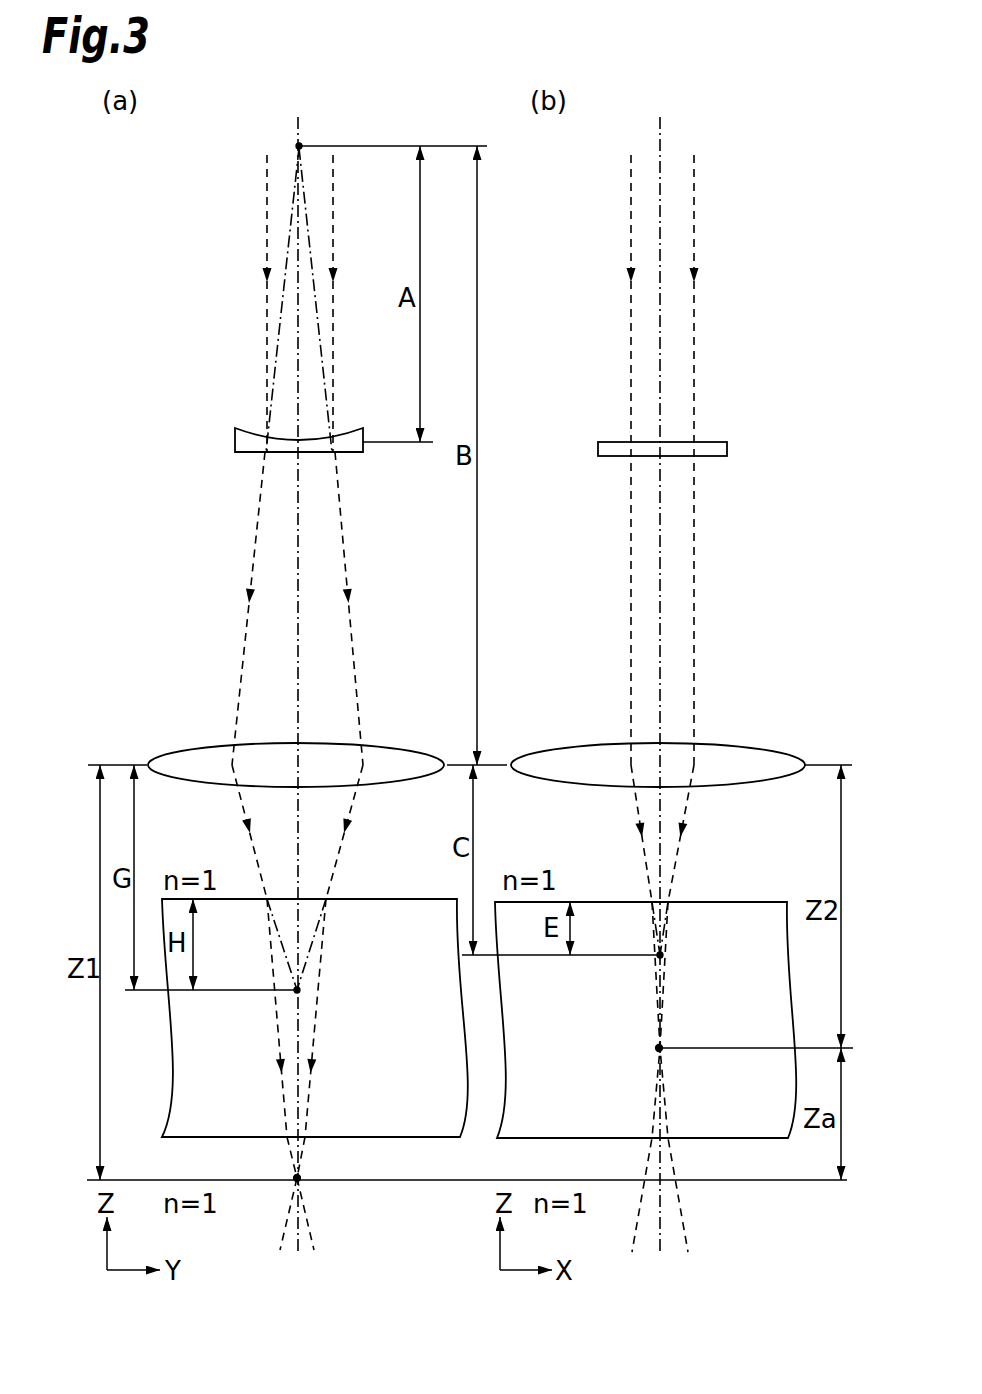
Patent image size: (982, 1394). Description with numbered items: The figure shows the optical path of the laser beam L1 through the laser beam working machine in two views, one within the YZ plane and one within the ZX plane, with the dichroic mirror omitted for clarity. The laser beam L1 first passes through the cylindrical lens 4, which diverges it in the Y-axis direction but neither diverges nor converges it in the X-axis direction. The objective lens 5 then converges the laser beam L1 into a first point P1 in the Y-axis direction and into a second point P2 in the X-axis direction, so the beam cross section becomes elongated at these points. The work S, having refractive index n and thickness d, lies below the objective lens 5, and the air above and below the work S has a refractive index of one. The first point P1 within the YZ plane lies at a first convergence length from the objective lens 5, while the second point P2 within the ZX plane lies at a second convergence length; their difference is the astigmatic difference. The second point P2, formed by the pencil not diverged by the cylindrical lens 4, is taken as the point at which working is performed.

The cylindrical lens 4 is at (235, 438).
The objective lens 5 is at (393, 747).
The laser beam L1 is at (267, 232).
The work S is at (383, 897).
The first point P1 is at (297, 1180).
The second point P2 is at (660, 1050).